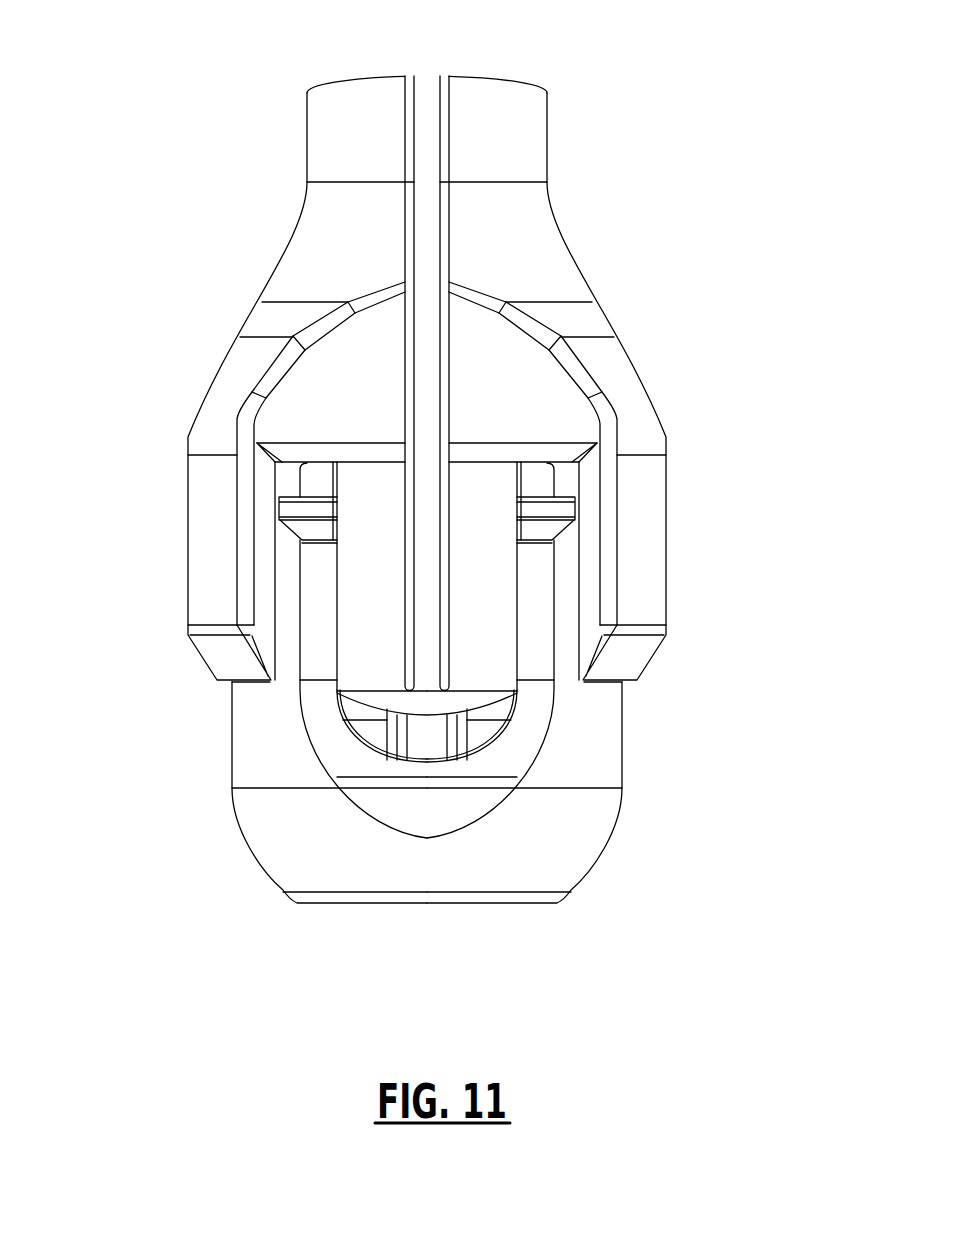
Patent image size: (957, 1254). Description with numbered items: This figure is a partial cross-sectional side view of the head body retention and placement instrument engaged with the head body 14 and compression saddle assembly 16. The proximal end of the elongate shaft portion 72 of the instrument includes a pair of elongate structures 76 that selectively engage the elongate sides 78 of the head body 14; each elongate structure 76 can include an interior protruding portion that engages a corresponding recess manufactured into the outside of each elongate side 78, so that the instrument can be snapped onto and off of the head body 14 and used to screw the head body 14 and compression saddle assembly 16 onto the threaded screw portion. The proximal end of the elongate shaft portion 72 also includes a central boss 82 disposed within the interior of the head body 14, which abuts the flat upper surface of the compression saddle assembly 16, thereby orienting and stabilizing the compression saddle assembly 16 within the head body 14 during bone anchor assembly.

The elongate shaft portion 72 is at (545, 155).
The elongate structures 76 is at (652, 390).
The central boss 82 is at (340, 567).
The head body 14 is at (447, 713).
The compression saddle assembly 16 is at (623, 757).
The elongate sides 78 is at (230, 738).